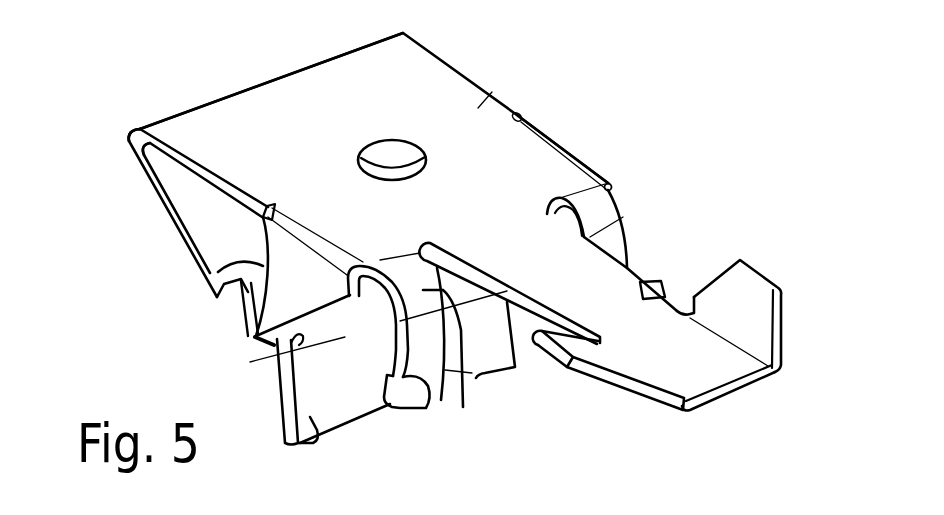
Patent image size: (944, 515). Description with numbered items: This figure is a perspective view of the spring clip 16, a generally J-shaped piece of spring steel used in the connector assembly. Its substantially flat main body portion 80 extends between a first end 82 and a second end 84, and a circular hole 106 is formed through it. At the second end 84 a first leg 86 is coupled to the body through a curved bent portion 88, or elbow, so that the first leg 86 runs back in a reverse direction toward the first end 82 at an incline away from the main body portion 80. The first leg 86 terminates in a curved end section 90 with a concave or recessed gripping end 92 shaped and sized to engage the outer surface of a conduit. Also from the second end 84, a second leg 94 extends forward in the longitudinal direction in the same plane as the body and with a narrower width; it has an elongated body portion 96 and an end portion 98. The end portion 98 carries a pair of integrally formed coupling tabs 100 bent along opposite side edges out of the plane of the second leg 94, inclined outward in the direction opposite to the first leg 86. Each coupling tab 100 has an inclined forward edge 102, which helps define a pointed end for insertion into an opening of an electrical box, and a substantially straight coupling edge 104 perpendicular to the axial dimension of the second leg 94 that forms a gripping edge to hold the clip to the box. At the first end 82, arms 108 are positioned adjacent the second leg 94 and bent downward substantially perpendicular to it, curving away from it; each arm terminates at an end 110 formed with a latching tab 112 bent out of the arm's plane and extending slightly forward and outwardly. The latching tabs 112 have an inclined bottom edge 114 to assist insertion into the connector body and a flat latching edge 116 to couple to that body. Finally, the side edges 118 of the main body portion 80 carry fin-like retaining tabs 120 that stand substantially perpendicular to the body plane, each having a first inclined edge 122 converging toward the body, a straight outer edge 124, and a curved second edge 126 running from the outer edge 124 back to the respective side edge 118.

The spring clip 16 is at (556, 110).
The main body portion 80 is at (500, 93).
The first end 82 is at (611, 185).
The second end 84 is at (405, 33).
The first leg 86 is at (163, 236).
The curved bent portion 88 is at (128, 150).
The curved end section 90 is at (315, 432).
The gripping end 92 is at (473, 373).
The second leg 94 is at (615, 285).
The elongated body portion 96 is at (648, 280).
The end portion 98 is at (705, 368).
The coupling tabs 100 is at (756, 287).
The inclined forward edge 102 is at (782, 326).
The coupling edge 104 is at (720, 283).
The circular hole 106 is at (383, 147).
The arms 108 is at (627, 218).
The end 110 is at (422, 407).
The latching tabs 112 is at (373, 386).
The inclined bottom edge 114 is at (378, 392).
The flat latching edge 116 is at (423, 386).
The side edges 118 is at (163, 136).
The retaining tabs 120 is at (298, 260).
The first inclined edge 122 is at (272, 348).
The straight outer edge 124 is at (254, 338).
The curved second edge 126 is at (213, 280).